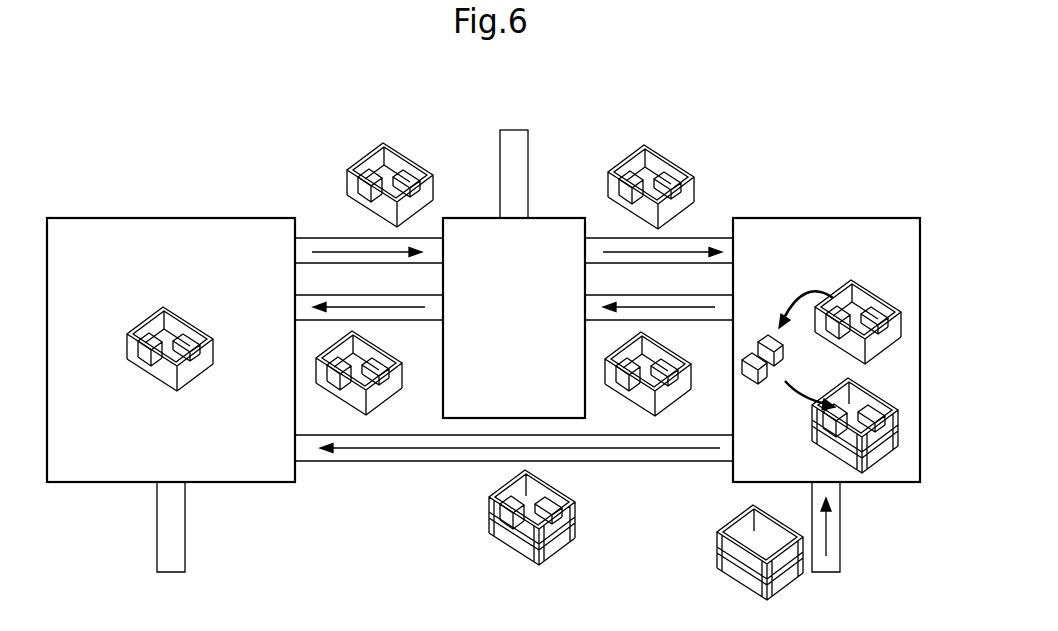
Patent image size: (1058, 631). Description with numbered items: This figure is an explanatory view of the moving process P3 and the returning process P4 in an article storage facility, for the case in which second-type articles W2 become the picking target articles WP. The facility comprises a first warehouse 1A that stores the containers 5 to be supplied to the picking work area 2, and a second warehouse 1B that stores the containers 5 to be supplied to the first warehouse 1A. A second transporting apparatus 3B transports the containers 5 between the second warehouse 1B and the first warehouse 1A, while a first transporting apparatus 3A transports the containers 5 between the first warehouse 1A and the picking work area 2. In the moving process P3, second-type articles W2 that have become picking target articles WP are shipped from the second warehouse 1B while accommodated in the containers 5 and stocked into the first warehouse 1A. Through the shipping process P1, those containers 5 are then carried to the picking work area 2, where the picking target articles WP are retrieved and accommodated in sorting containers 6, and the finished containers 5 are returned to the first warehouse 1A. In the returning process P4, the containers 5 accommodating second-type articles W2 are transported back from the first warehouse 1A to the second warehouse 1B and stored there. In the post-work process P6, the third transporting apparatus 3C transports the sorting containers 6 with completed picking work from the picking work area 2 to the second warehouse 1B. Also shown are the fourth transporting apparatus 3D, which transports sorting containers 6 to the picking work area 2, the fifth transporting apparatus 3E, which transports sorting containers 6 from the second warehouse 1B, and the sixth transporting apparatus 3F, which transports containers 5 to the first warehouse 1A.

The first warehouse 1A is at (491, 218).
The second warehouse 1B is at (160, 218).
The picking work area 2 is at (836, 218).
The first transporting apparatus 3A is at (635, 295).
The second transporting apparatus 3B is at (352, 294).
The third transporting apparatus 3C is at (440, 462).
The fourth transporting apparatus 3D is at (840, 528).
The fifth transporting apparatus 3E is at (185, 512).
The sixth transporting apparatus 3F is at (528, 164).
The container 5 is at (347, 181).
The sorting container 6 is at (512, 543).
The second-type article W2 is at (410, 177).
The picking target article WP is at (752, 351).
The shipping process P1 is at (695, 306).
The moving process P3 is at (368, 256).
The returning process P4 is at (340, 309).
The post-work process P6 is at (378, 450).